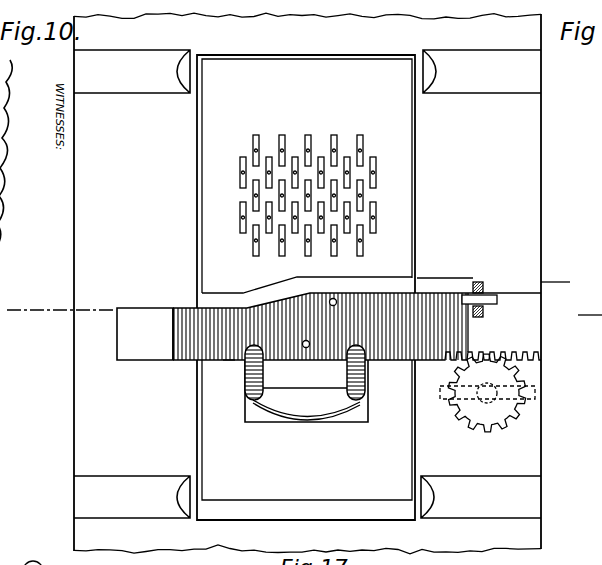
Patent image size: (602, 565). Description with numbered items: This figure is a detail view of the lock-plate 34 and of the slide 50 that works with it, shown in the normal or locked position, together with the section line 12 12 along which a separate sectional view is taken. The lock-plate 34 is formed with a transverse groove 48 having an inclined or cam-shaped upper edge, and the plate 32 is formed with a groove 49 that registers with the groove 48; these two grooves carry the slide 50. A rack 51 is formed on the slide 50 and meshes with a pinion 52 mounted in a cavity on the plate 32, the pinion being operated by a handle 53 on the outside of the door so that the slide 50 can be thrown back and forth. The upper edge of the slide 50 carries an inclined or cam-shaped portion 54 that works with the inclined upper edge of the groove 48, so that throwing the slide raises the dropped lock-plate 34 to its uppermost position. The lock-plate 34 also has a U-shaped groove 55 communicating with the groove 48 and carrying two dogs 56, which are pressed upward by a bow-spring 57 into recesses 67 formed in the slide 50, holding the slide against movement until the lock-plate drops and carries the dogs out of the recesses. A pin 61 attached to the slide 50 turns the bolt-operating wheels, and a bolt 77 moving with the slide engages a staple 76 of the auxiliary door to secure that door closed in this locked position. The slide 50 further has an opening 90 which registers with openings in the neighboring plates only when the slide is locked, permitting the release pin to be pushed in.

The section line 12 is at (289, 287).
The plate 32 is at (307, 283).
The lock-plate 34 is at (306, 287).
The transverse groove 48 is at (397, 287).
The groove 49 is at (551, 265).
The slide 50 is at (489, 322).
The rack 51 is at (541, 358).
The pinion 52 is at (500, 405).
The handle 53 is at (535, 391).
The inclined or cam-shaped portion 54 is at (267, 303).
The U-shaped groove 55 is at (306, 391).
The dogs 56 is at (250, 373).
The bow-spring 57 is at (338, 417).
The pin 61 is at (336, 300).
The recesses 67 is at (223, 360).
The staple 76 is at (484, 282).
The bolt 77 is at (497, 291).
The opening 90 is at (306, 348).